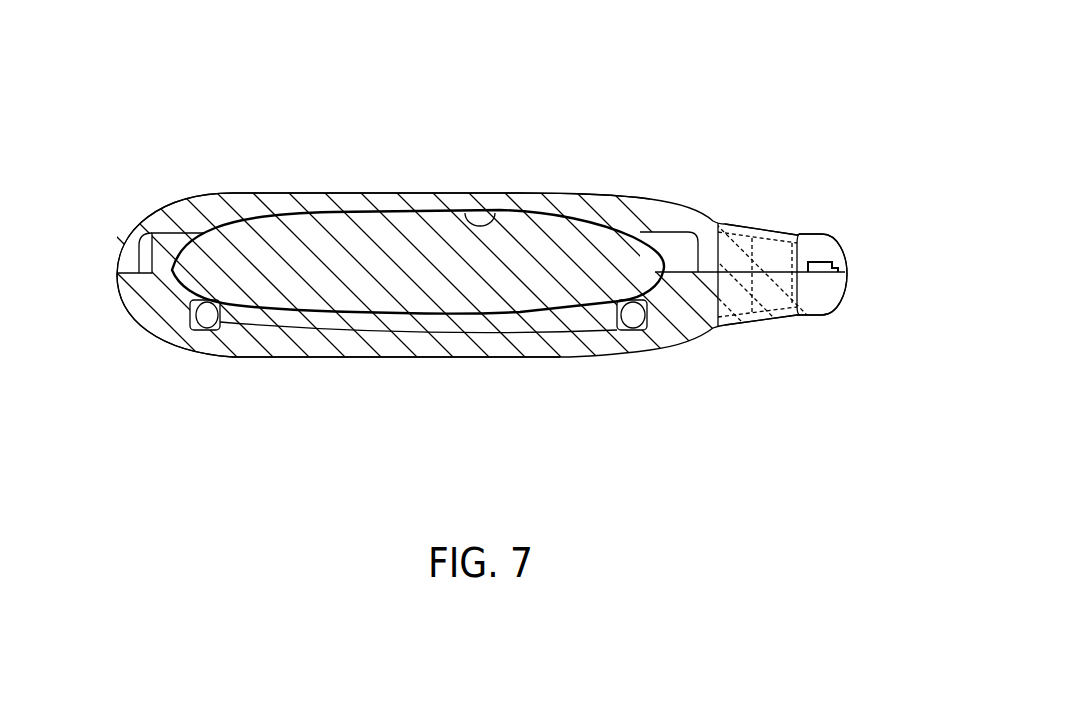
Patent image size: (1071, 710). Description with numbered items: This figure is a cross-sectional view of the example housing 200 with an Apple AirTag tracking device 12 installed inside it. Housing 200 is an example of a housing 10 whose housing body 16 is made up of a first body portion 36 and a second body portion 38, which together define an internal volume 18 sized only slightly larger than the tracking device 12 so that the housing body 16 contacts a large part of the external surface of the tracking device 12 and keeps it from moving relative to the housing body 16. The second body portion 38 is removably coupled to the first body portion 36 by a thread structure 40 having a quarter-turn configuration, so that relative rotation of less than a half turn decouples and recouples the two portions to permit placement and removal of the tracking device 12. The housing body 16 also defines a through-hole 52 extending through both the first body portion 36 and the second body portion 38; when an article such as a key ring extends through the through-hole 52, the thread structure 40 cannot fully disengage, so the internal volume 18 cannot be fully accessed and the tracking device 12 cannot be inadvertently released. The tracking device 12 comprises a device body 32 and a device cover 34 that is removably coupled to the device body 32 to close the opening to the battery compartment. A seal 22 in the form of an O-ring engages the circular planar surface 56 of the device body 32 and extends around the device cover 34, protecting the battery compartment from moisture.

The housing 10 is at (825, 72).
The housing 200 is at (816, 110).
The tracking device 12 is at (600, 197).
The housing body 16 is at (308, 193).
The internal volume 18 is at (498, 212).
The seal 22 is at (619, 222).
The device body 32 is at (233, 195).
The device cover 34 is at (513, 333).
The first body portion 36 is at (408, 191).
The second body portion 38 is at (378, 358).
The thread structure 40 is at (145, 260).
The through-hole 52 is at (796, 284).
The circular planar surface 56 is at (200, 302).